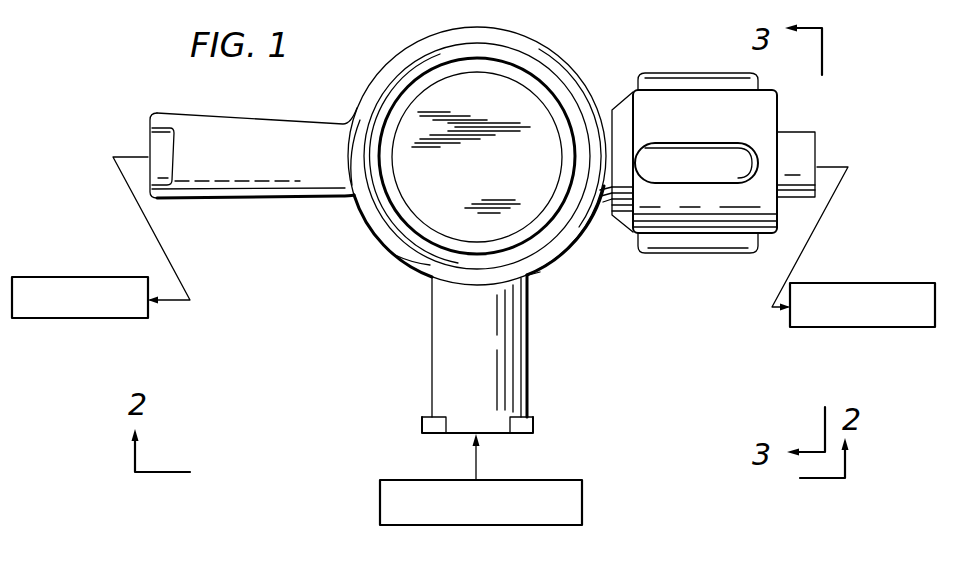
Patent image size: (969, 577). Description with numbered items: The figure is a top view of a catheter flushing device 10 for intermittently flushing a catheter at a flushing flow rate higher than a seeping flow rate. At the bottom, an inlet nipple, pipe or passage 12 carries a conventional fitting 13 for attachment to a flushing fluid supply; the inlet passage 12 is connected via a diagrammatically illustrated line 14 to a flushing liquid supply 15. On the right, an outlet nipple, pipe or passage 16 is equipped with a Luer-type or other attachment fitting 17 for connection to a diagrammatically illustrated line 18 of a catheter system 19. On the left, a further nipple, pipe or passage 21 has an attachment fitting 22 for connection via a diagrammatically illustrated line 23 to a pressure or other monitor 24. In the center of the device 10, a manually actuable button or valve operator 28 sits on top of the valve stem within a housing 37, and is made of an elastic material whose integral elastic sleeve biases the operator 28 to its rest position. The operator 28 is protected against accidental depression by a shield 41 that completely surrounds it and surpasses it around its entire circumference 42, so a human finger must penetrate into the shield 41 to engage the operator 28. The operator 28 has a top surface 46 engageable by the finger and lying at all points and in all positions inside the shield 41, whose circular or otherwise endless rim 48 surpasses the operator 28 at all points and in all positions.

The catheter flushing device 10 is at (377, 62).
The inlet passage 12 is at (432, 368).
The fitting 13 is at (422, 425).
The line 14 is at (478, 468).
The flushing liquid supply 15 is at (380, 497).
The outlet passage 16 is at (805, 133).
The attachment fitting 17 is at (716, 73).
The line 18 is at (810, 248).
The catheter system 19 is at (862, 283).
The passage 21 is at (250, 126).
The attachment fitting 22 is at (157, 151).
The line 23 is at (144, 215).
The monitor 24 is at (104, 270).
The valve operator 28 is at (513, 104).
The housing 37 is at (540, 288).
The shield 41 is at (359, 230).
The circumference 42 is at (556, 205).
The top surface 46 is at (487, 198).
The rim 48 is at (412, 247).